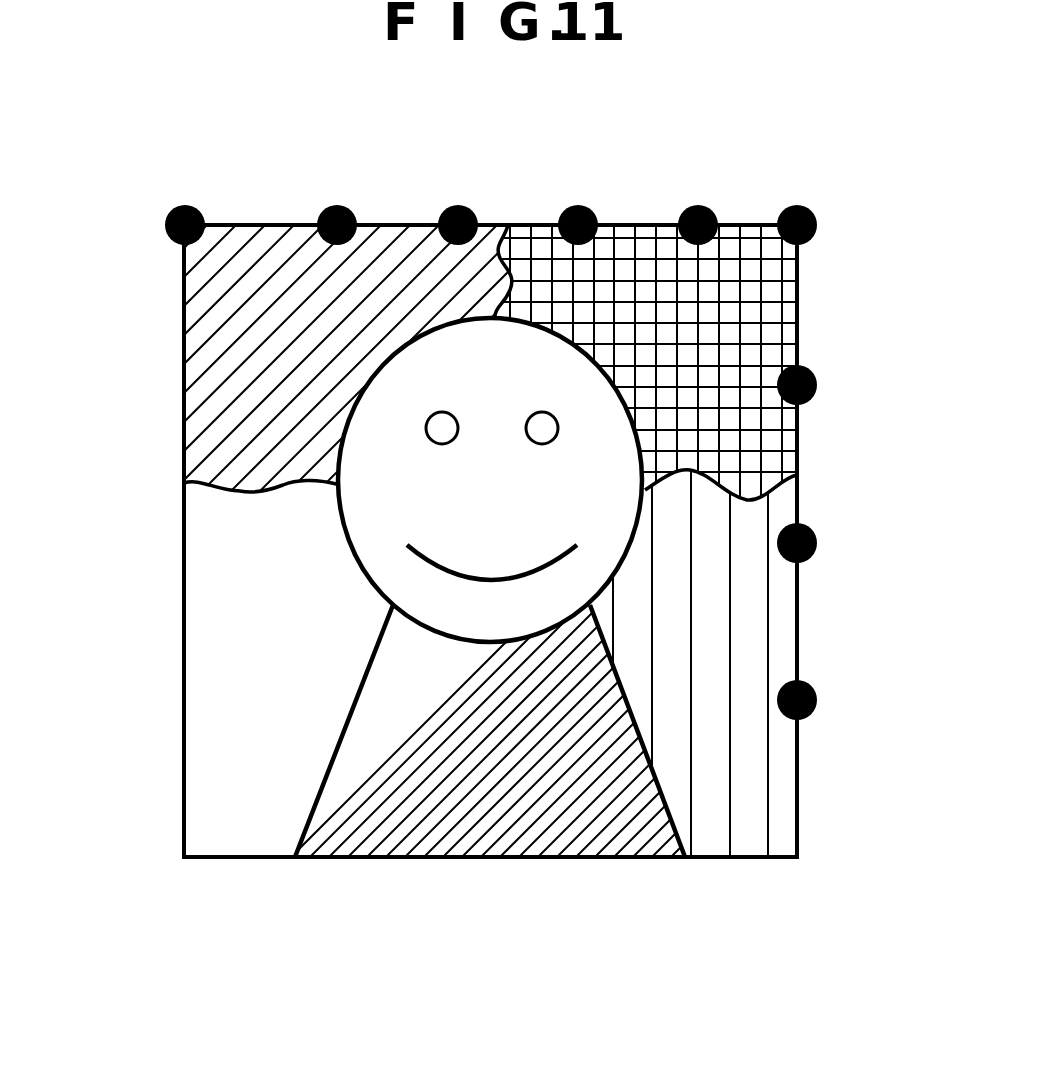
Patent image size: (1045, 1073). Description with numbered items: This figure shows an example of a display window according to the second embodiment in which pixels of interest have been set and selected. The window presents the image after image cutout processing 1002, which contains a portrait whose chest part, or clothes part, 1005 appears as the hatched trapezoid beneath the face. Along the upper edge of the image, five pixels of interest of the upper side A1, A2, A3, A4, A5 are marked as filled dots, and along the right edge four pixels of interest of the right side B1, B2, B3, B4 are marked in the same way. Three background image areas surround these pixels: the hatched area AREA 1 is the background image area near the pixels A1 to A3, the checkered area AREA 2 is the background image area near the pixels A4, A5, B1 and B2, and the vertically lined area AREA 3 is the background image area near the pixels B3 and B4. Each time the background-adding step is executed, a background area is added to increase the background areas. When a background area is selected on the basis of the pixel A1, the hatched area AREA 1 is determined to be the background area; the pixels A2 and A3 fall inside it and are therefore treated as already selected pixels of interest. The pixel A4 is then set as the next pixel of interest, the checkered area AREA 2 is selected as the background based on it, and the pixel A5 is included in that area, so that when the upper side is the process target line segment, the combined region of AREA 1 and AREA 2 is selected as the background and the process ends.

The image after image cutout processing 1002 is at (183, 687).
The chest part (clothes part) 1005 is at (495, 842).
The background image area near pixels A1 to A3 AREA 1 is at (200, 362).
The background image area near pixels A4, A5, B1 and B2 AREA 2 is at (787, 290).
The background image area near pixels B3 and B4 AREA 3 is at (780, 795).
The pixel of interest of the upper side A1 is at (185, 207).
The pixel of interest of the upper side A2 is at (337, 207).
The pixel of interest of the upper side A3 is at (458, 207).
The pixel of interest of the upper side A4 is at (578, 207).
The pixel of interest of the upper side A5 is at (698, 207).
The pixel of interest of the right side B1 is at (823, 225).
The pixel of interest of the right side B2 is at (823, 385).
The pixel of interest of the right side B3 is at (823, 543).
The pixel of interest of the right side B4 is at (823, 700).